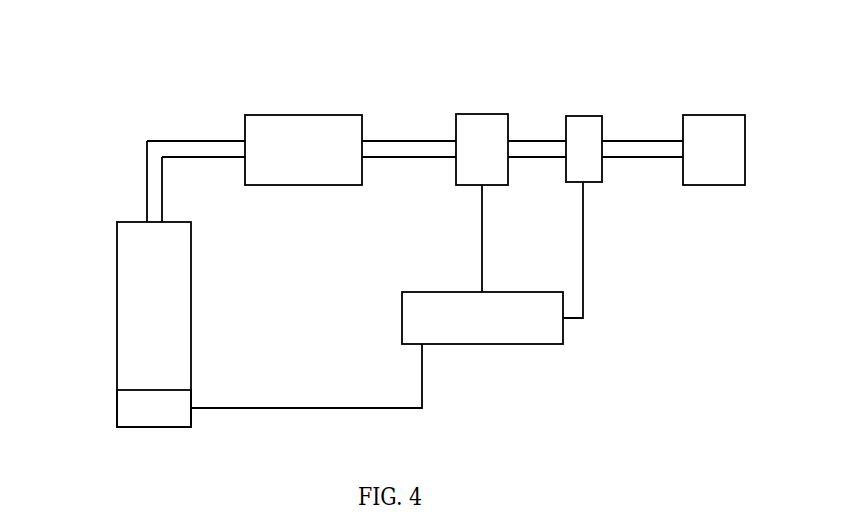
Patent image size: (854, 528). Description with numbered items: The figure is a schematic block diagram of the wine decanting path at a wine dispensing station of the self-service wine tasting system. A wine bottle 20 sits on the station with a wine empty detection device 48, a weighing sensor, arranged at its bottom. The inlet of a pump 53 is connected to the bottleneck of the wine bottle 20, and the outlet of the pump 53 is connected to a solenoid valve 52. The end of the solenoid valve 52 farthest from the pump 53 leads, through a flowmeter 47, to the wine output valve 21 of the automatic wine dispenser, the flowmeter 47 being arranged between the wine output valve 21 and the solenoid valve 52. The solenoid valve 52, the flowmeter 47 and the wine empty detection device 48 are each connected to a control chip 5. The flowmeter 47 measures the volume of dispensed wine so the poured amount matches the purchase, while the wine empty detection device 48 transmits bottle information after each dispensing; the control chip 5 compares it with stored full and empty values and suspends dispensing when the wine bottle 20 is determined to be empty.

The pump 53 is at (308, 117).
The solenoid valve 52 is at (482, 113).
The flowmeter 47 is at (582, 118).
The wine output valve 21 is at (710, 172).
The wine bottle 20 is at (153, 293).
The wine empty detection device 48 is at (130, 407).
The control chip 5 is at (492, 328).